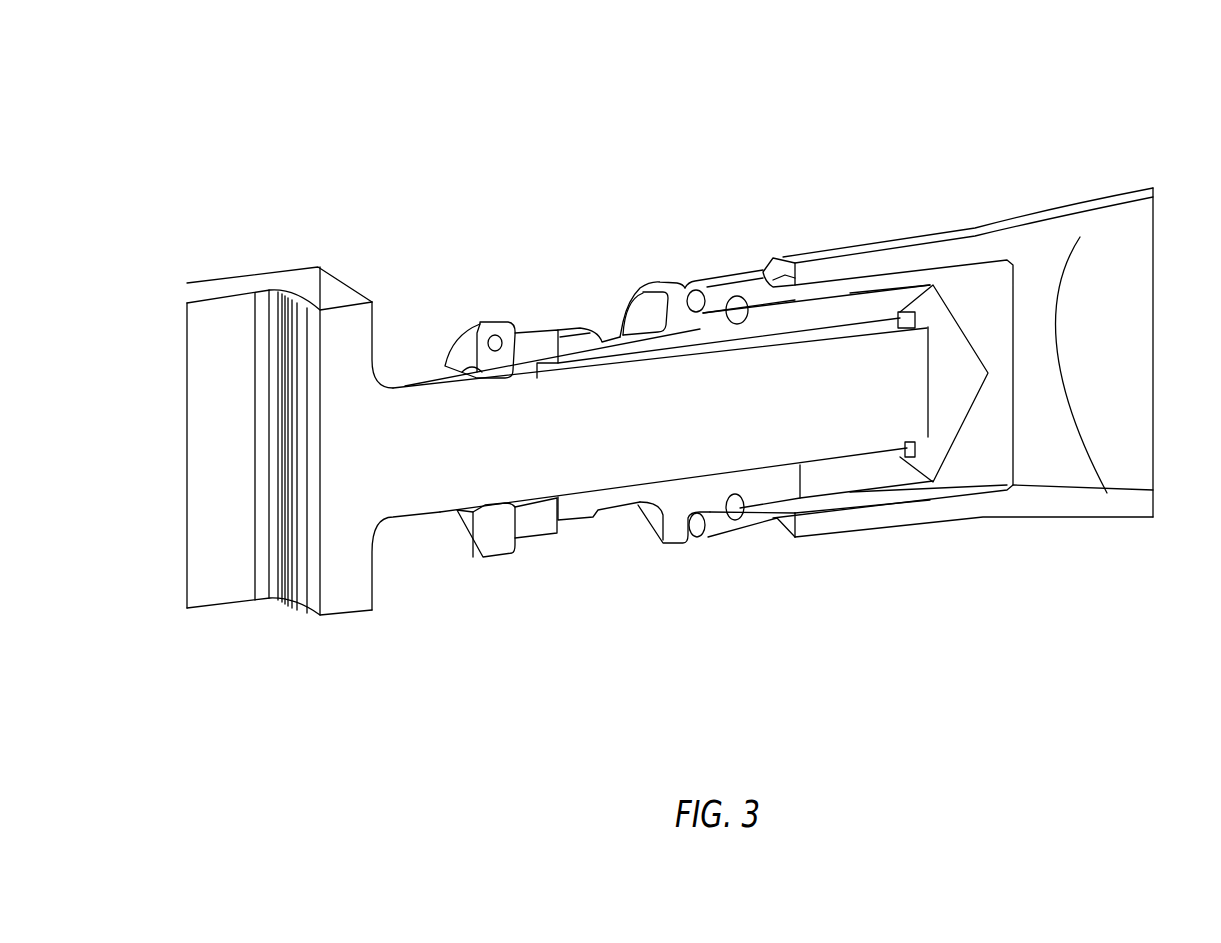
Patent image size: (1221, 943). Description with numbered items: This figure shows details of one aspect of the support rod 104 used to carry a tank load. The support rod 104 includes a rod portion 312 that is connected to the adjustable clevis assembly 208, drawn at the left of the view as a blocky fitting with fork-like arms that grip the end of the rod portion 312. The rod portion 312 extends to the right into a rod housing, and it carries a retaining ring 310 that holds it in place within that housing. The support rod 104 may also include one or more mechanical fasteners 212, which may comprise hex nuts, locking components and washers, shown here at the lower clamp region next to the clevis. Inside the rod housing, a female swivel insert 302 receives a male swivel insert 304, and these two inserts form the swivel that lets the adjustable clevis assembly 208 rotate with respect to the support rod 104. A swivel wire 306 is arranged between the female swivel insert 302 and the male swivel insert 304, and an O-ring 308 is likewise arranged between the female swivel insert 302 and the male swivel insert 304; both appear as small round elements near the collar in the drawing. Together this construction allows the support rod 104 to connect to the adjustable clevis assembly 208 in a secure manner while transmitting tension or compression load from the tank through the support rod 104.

The support rod 104 is at (958, 193).
The adjustable clevis assembly 208 is at (349, 619).
The mechanical fasteners 212 is at (517, 557).
The female swivel insert 302 is at (733, 270).
The male swivel insert 304 is at (636, 283).
The swivel wire 306 is at (747, 520).
The O-ring 308 is at (699, 539).
The retaining ring 310 is at (932, 250).
The rod portion 312 is at (478, 397).